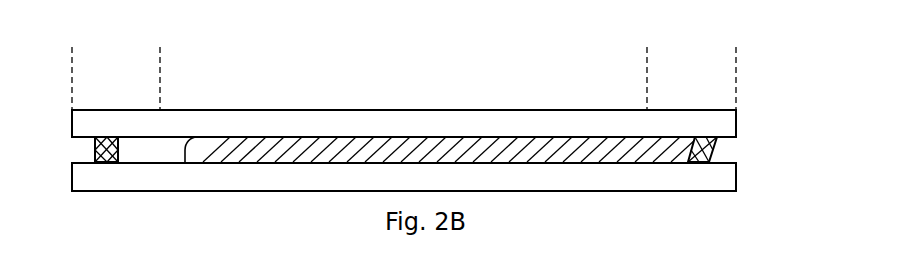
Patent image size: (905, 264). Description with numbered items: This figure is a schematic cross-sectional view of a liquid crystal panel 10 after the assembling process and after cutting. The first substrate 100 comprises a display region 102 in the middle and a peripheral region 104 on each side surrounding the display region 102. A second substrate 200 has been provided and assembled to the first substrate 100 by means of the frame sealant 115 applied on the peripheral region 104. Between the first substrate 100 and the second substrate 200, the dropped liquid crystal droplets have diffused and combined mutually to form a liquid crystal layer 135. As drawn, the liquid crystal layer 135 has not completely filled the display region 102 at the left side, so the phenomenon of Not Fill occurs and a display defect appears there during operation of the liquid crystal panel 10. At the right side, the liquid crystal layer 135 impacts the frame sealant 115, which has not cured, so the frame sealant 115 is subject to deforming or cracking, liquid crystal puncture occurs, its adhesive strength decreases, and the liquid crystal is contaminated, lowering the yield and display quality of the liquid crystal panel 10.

The liquid crystal panel 10 is at (428, 106).
The first substrate 100 is at (404, 177).
The second substrate 200 is at (404, 123).
The liquid crystal layer 135 is at (441, 149).
The frame sealant 115 is at (717, 149).
The display region 102 is at (647, 63).
The peripheral region 104 is at (160, 63).